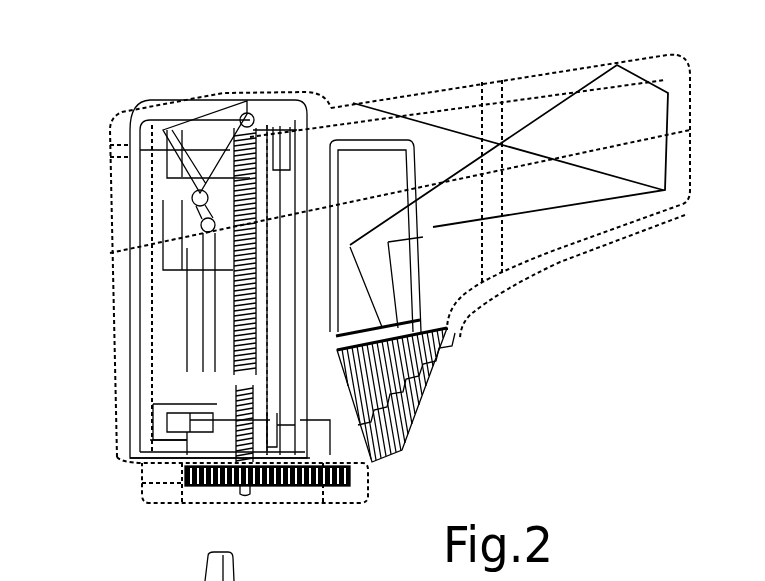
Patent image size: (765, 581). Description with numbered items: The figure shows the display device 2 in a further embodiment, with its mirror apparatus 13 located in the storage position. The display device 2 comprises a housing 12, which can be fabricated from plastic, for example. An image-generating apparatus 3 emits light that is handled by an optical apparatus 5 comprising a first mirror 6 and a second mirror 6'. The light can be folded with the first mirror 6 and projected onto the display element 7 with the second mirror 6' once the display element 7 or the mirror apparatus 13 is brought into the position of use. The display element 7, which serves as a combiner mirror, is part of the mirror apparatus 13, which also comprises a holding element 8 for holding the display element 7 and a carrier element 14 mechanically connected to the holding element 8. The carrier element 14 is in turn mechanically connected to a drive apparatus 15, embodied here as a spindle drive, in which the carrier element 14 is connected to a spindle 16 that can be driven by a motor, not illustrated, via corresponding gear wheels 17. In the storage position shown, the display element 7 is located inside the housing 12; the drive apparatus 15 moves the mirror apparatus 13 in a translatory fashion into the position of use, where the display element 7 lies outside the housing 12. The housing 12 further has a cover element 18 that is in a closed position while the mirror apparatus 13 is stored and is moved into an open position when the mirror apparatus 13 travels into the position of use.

The display device 2 is at (213, 80).
The image-generating apparatus 3 is at (447, 343).
The optical apparatus 5 is at (583, 267).
The first mirror 6 is at (442, 239).
The second mirror 6' is at (543, 155).
The display element 7 is at (193, 328).
The holding element 8 is at (262, 375).
The housing 12 is at (121, 121).
The mirror apparatus 13 is at (183, 372).
The carrier element 14 is at (160, 448).
The drive apparatus 15 is at (165, 486).
The spindle 16 is at (233, 305).
The gear wheels 17 is at (277, 487).
The cover element 18 is at (178, 112).